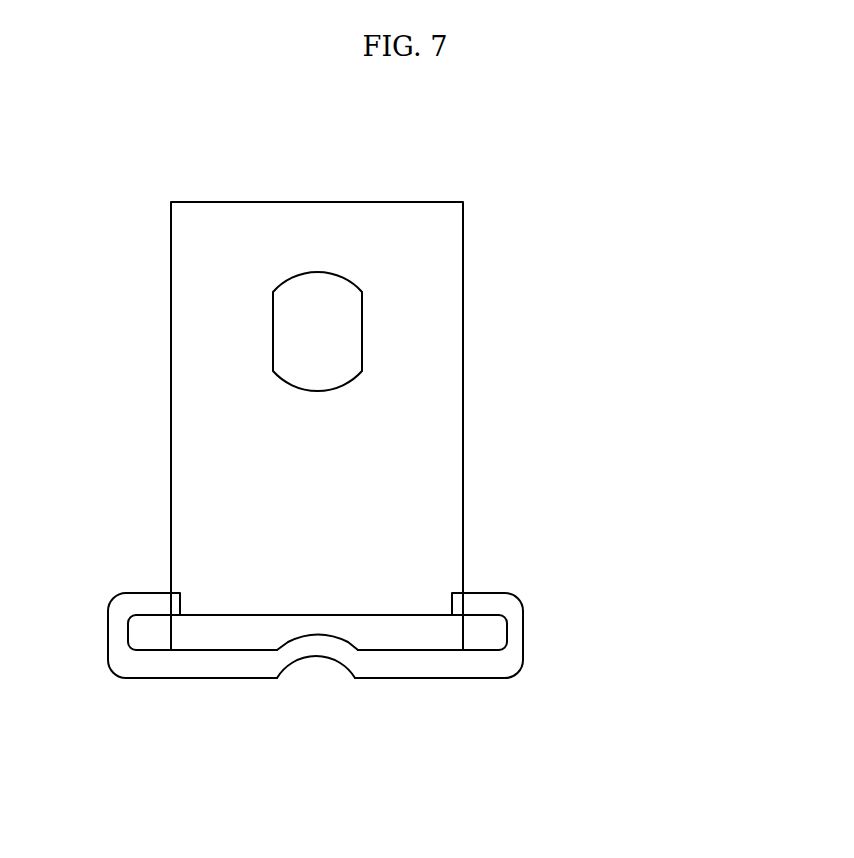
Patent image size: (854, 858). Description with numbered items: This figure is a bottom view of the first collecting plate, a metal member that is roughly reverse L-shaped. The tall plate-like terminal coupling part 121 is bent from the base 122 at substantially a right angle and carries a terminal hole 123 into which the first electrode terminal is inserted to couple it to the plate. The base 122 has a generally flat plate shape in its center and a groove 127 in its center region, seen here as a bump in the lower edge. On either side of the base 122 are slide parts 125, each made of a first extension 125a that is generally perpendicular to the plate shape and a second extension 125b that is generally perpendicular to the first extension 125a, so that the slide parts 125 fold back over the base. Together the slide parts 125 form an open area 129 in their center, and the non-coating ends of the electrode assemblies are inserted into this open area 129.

The terminal coupling part 121 is at (295, 226).
The base 122 is at (430, 668).
The terminal hole 123 is at (343, 331).
The slide part 125 is at (572, 619).
The first extension 125a is at (516, 637).
The second extension 125b is at (482, 603).
The groove 127 is at (329, 663).
The open area 129 is at (488, 639).